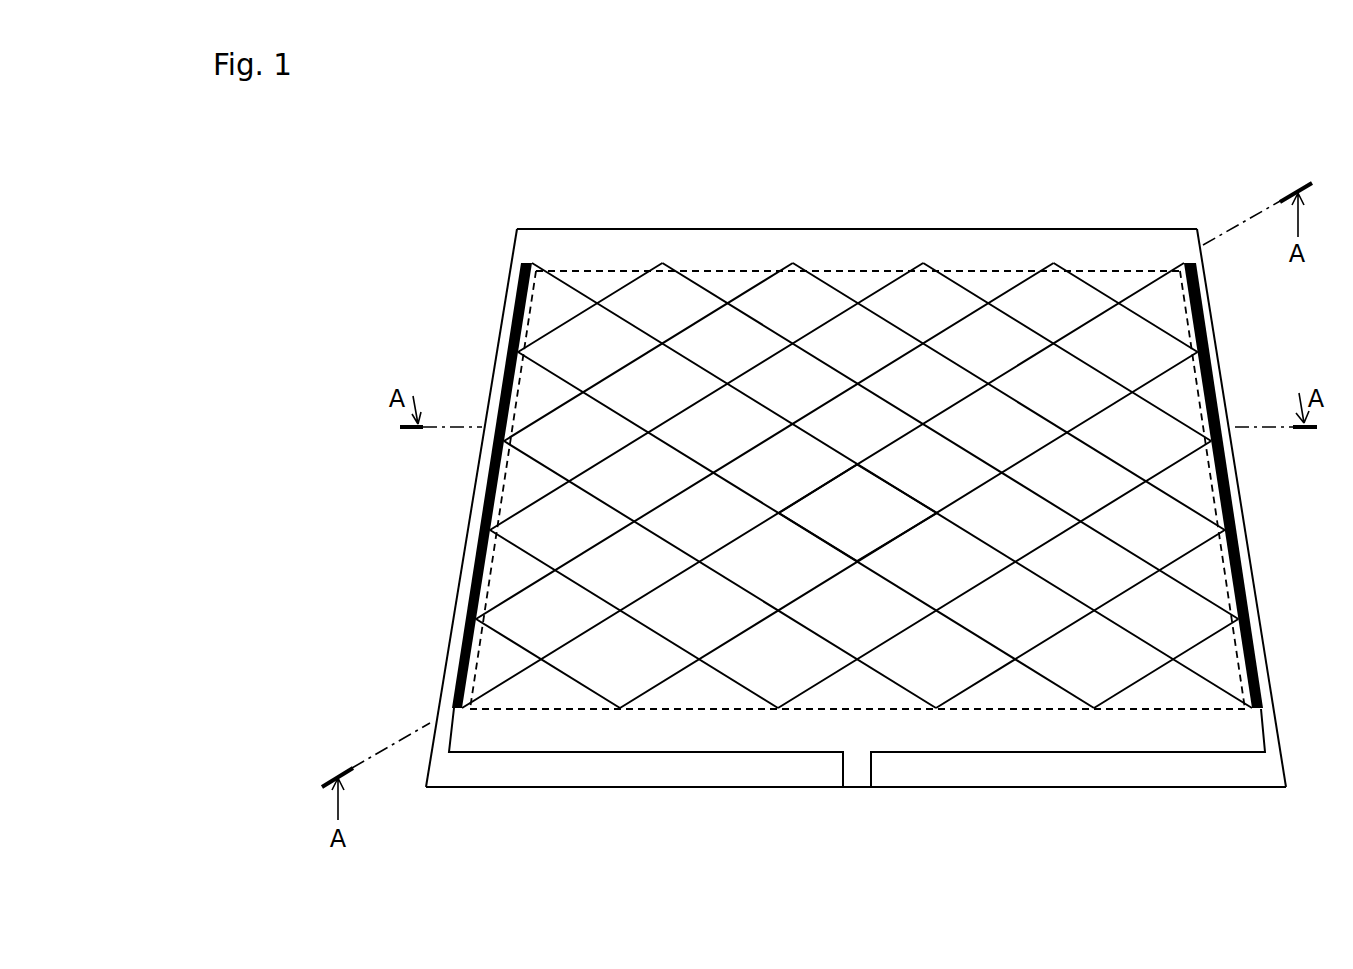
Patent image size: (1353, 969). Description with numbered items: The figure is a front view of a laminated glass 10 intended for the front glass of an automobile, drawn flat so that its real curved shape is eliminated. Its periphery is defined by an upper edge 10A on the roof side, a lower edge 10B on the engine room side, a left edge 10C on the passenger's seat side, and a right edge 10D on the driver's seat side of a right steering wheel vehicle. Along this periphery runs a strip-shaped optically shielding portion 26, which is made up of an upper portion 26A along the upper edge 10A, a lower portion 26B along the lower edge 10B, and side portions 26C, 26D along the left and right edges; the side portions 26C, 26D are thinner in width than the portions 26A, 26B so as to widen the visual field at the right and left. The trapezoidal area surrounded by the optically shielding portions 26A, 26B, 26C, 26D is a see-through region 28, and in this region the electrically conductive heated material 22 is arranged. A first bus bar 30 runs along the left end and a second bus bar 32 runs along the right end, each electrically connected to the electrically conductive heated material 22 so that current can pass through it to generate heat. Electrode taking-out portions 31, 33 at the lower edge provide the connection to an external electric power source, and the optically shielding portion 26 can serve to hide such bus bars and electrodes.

The laminated glass 10 is at (856, 496).
The upper edge 10A is at (858, 244).
The lower edge 10B is at (1114, 789).
The left edge 10C is at (480, 462).
The right edge 10D is at (1236, 463).
The electrically conductive heated material 22 is at (687, 323).
The optically shielding portion 26 is at (855, 511).
The optically shielding portion along the upper edge 26A is at (735, 242).
The optically shielding portion along the lower edge 26B is at (975, 735).
The optically shielding portion along the left edge 26C is at (477, 553).
The optically shielding portion along the right edge 26D is at (1240, 553).
The see-through region 28 is at (869, 525).
The first bus bar 30 is at (511, 333).
The electrode taking-out portion 31 is at (843, 788).
The second bus bar 32 is at (1207, 337).
The electrode taking-out portion 33 is at (872, 788).